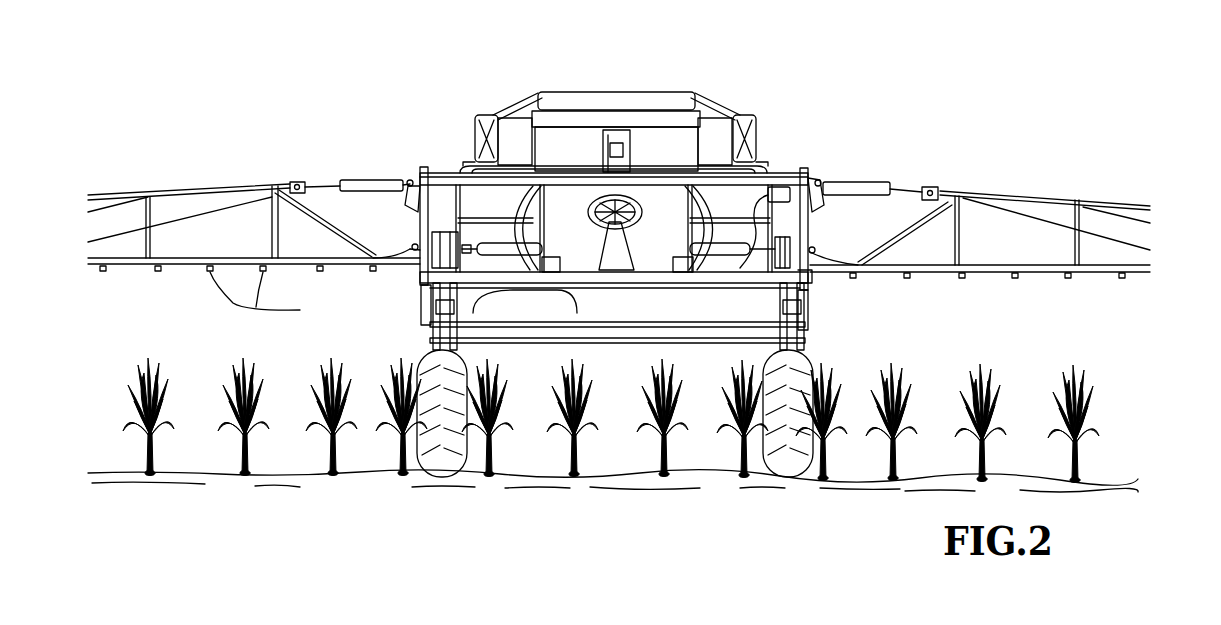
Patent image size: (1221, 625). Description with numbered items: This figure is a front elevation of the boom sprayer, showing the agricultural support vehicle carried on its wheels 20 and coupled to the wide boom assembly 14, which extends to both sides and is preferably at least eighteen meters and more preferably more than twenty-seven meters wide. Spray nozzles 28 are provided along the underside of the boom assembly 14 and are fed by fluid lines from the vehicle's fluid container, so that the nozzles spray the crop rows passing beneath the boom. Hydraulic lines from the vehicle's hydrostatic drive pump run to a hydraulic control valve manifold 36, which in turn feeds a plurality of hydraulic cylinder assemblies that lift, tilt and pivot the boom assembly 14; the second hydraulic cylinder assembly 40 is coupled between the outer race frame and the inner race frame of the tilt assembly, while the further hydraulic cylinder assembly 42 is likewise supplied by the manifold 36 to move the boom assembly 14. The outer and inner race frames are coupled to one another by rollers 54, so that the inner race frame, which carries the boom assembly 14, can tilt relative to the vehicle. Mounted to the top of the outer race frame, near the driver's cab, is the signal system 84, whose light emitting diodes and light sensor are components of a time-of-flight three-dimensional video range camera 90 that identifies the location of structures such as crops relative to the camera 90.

The boom assembly 14 is at (248, 187).
The wheels 20 is at (803, 357).
The spray nozzles 28 is at (473, 313).
The hydraulic control valve manifold 36 is at (781, 188).
The second hydraulic cylinder assembly 40 is at (801, 172).
The third hydraulic cylinder assembly 42 is at (840, 183).
The rollers 54 is at (803, 275).
The signal system 84 is at (614, 140).
The 3D video range camera 90 is at (620, 150).